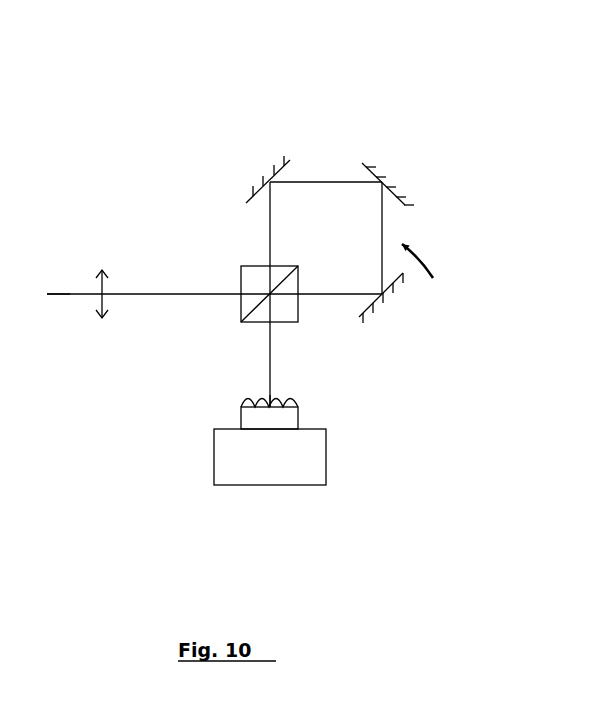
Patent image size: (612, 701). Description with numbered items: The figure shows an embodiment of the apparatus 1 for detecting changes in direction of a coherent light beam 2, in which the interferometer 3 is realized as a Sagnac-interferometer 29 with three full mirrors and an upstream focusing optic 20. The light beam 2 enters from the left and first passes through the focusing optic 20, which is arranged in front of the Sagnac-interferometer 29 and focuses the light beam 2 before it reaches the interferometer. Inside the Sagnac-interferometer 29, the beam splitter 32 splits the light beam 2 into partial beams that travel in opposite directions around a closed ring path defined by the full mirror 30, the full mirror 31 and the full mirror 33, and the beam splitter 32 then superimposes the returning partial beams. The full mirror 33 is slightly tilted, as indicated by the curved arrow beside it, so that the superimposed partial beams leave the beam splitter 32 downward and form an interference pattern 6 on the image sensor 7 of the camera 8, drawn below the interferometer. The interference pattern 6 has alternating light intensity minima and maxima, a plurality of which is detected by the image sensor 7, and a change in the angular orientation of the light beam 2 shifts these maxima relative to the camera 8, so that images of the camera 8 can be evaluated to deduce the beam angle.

The apparatus 1 is at (473, 117).
The light beam 2 is at (59, 289).
The interferometer 3 is at (375, 137).
The interference pattern 6 is at (298, 385).
The image sensor 7 is at (298, 415).
The camera 8 is at (326, 457).
The focusing optic 20 is at (98, 327).
The Sagnac-interferometer 29 is at (147, 190).
The full mirror 30 is at (270, 160).
The full mirror 31 is at (408, 187).
The beam splitter 32 is at (248, 265).
The full mirror 33 is at (403, 298).